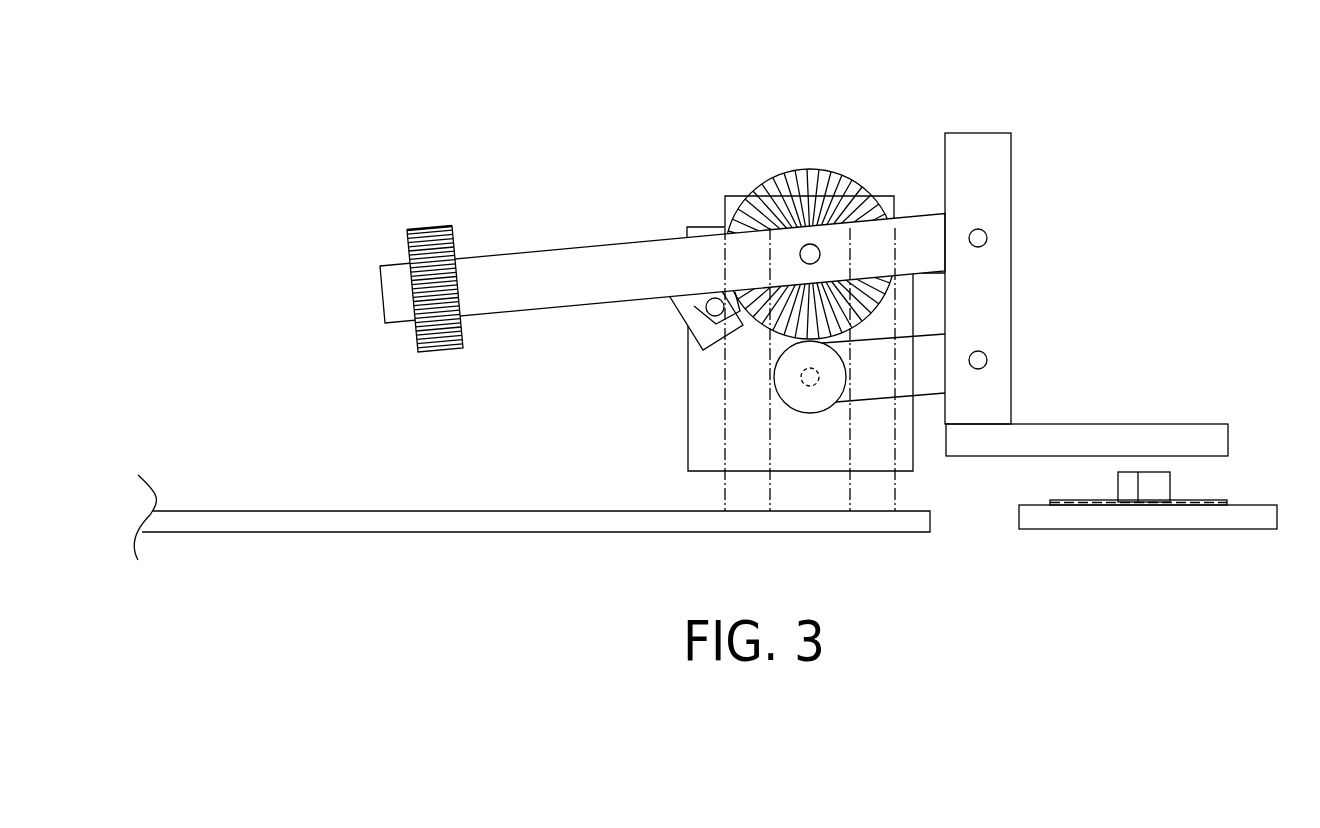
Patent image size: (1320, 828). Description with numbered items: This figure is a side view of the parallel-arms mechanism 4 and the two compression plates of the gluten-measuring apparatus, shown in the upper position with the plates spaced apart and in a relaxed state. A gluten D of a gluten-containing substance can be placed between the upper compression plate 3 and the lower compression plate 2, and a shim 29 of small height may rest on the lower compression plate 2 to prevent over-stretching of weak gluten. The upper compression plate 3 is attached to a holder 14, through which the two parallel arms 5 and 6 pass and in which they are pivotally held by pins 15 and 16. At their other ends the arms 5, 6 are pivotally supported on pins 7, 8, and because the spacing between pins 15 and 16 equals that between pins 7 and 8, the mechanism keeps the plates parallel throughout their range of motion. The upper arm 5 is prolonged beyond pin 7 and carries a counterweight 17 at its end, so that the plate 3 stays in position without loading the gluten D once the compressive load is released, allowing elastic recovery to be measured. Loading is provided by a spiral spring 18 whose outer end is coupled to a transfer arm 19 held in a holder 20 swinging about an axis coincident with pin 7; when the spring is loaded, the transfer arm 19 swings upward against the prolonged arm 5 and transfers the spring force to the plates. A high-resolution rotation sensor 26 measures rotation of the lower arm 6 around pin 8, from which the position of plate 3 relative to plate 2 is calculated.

The lower compression plate 2 is at (1147, 520).
The upper compression plate 3 is at (1123, 440).
The parallel-arms mechanism 4 is at (527, 156).
The upper arm 5 is at (546, 258).
The lower arm 6 is at (908, 368).
The pin 7 is at (803, 248).
The pin 8 is at (805, 377).
The holder 14 is at (973, 155).
The pin 15 is at (985, 236).
The pin 16 is at (986, 357).
The counterweight 17 is at (420, 240).
The spiral spring 18 is at (820, 180).
The transfer arm 19 is at (688, 330).
The holder 20 is at (745, 328).
The rotation sensor 26 is at (813, 402).
The shim 29 is at (1212, 500).
The gluten D is at (1148, 483).